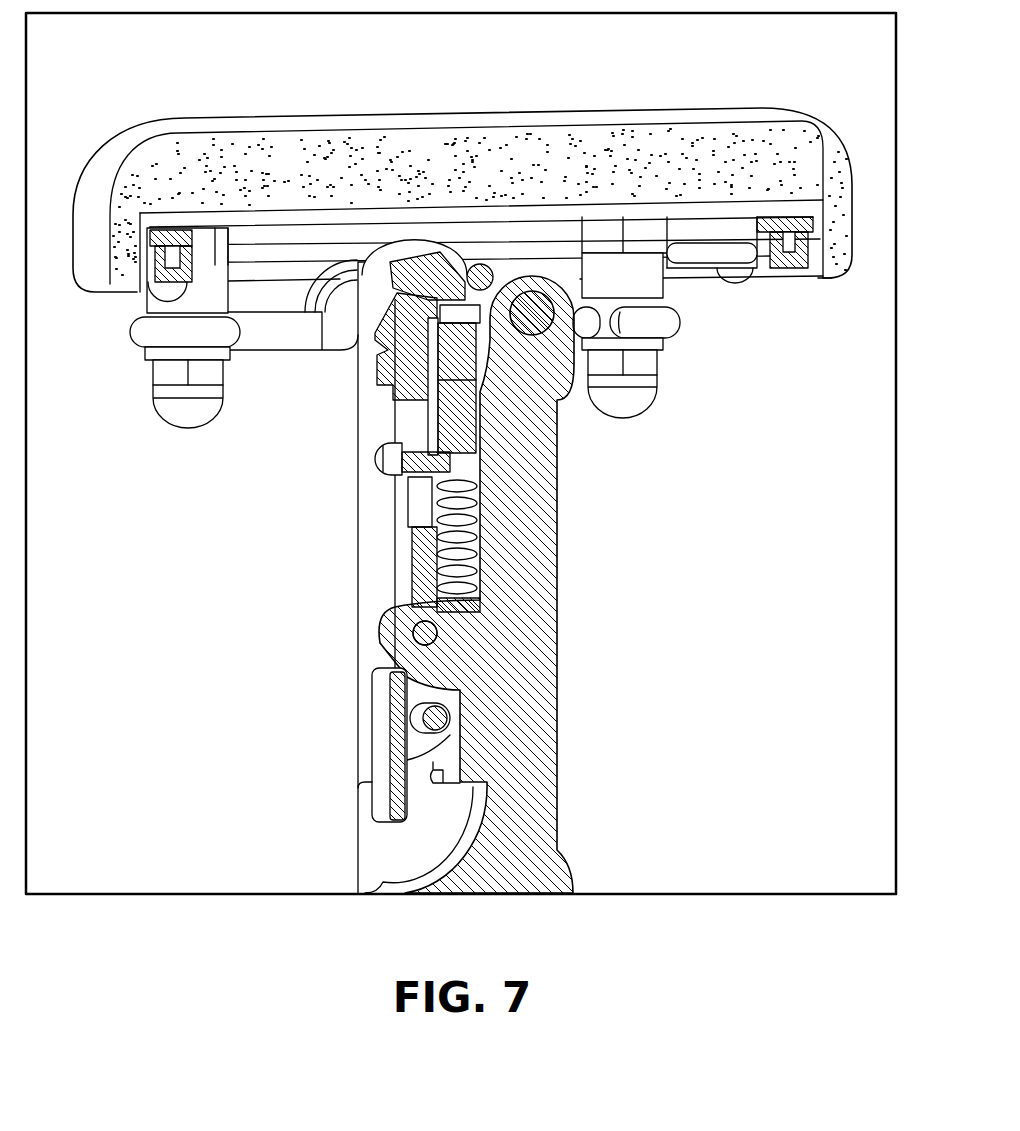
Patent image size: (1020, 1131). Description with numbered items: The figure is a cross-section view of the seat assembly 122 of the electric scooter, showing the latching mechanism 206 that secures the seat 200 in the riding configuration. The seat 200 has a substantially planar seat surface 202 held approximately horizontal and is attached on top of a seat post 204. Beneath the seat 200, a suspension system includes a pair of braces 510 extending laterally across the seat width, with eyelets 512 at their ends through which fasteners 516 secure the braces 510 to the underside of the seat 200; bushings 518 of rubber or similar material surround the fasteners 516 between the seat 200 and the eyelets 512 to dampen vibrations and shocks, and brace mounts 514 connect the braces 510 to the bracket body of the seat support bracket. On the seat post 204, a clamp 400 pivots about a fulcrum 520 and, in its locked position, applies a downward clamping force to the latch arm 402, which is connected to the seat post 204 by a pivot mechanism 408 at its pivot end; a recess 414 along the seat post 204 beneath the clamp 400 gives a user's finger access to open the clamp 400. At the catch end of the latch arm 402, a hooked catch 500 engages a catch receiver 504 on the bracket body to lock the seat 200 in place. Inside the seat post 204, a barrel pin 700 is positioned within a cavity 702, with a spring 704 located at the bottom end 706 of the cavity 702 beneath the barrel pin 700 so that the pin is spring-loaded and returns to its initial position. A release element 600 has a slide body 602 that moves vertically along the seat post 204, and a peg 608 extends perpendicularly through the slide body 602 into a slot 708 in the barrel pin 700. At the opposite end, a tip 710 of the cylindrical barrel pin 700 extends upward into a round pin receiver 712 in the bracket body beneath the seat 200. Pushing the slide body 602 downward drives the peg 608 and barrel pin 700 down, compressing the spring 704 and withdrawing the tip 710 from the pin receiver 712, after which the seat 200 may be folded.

The seat assembly 122 is at (138, 106).
The seat 200 is at (808, 158).
The seat surface 202 is at (595, 108).
The seat post 204 is at (557, 720).
The latching mechanism 206 is at (290, 557).
The clamp 400 is at (398, 750).
The latch arm 402 is at (380, 640).
The pivot mechanism 408 is at (447, 722).
The recess 414 is at (395, 847).
The hooked catch 500 is at (415, 262).
The catch receiver 504 is at (375, 398).
The braces 510 is at (262, 334).
The eyelets 512 is at (142, 331).
The brace mounts 514 is at (345, 295).
The fasteners 516 is at (178, 413).
The bushings 518 is at (150, 300).
The fulcrum 520 is at (414, 626).
The release element 600 is at (312, 507).
The slide body 602 is at (378, 488).
The peg 608 is at (470, 440).
The barrel pin 700 is at (458, 420).
The cavity 702 is at (452, 580).
The spring 704 is at (450, 553).
The bottom end 706 is at (468, 618).
The slot 708 is at (462, 468).
The tip 710 is at (462, 298).
The pin receiver 712 is at (545, 395).